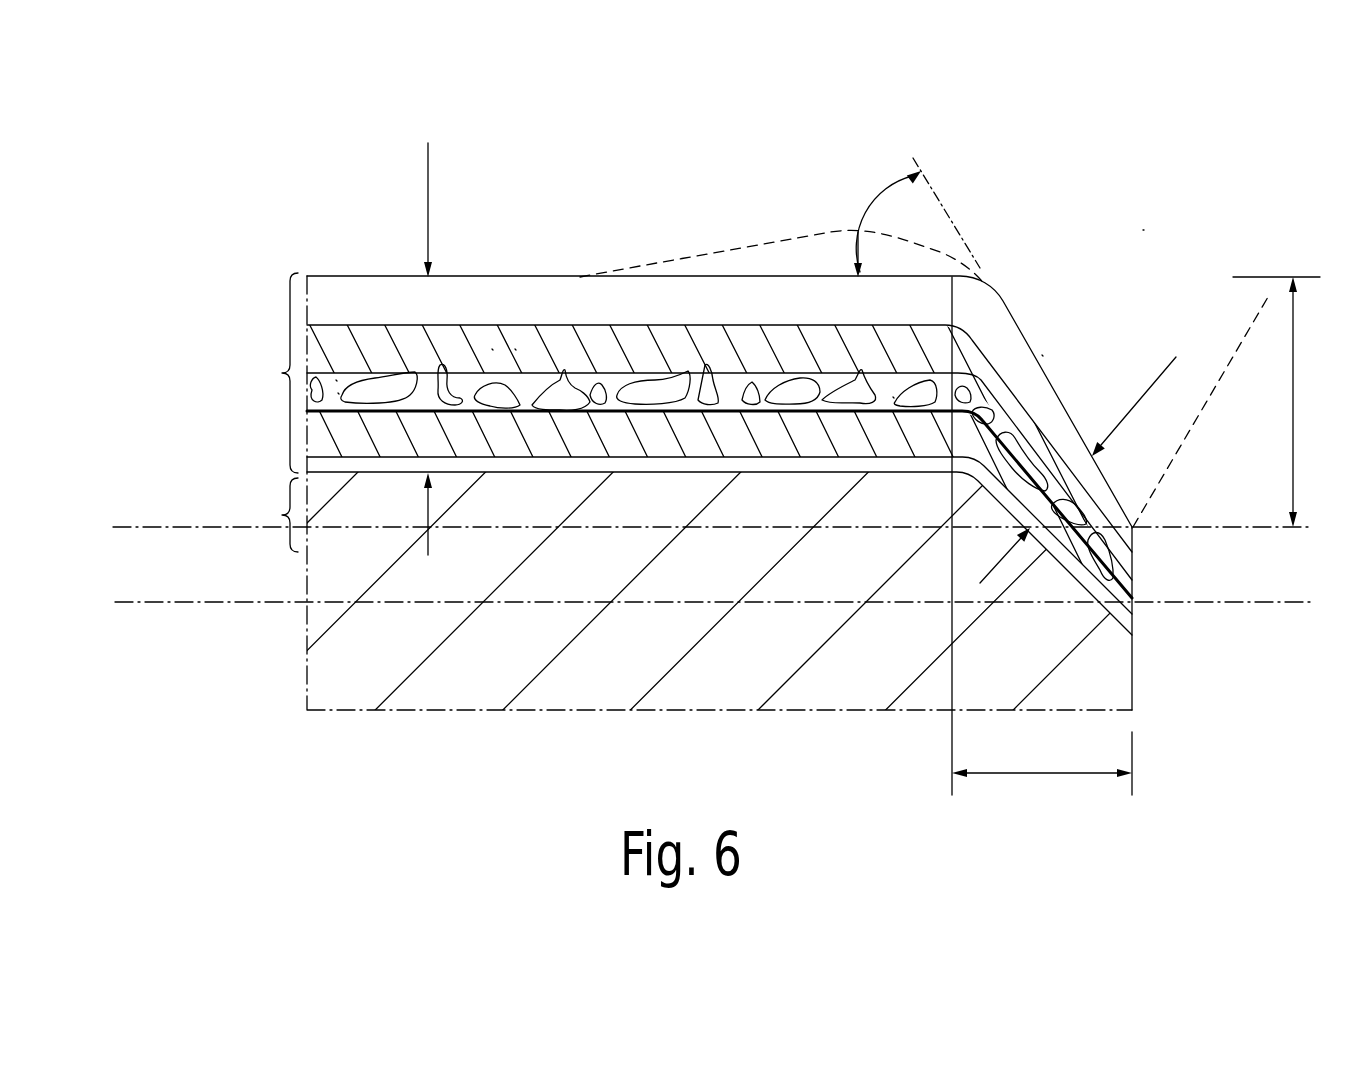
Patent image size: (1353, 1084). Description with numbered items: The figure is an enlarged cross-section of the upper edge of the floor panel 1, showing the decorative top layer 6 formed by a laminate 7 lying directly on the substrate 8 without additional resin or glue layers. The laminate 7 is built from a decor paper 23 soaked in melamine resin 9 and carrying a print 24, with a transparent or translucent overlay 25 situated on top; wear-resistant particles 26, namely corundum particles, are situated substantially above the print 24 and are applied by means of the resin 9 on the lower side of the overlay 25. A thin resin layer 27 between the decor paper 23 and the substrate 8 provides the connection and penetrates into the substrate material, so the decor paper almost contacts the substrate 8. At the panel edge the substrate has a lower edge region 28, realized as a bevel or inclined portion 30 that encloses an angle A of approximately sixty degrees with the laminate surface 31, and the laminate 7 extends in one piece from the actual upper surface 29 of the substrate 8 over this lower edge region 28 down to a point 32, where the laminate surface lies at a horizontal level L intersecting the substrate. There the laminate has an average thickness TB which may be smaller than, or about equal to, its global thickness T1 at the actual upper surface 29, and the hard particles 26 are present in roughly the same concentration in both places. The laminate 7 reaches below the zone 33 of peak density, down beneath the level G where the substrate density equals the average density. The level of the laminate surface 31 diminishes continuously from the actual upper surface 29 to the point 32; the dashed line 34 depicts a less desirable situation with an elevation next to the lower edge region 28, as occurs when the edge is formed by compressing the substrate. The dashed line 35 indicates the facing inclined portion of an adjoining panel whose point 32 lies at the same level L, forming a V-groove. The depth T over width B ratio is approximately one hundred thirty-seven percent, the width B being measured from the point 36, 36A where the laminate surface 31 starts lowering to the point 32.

The floor panel 1 is at (1143, 230).
The decorative top layer 6 is at (515, 350).
The laminate 7 is at (280, 373).
The substrate 8 is at (612, 640).
The melamine resin 9 is at (770, 372).
The decor paper 23 is at (632, 400).
The print 24 is at (338, 395).
The overlay 25 is at (492, 350).
The wear-resistant particles 26 is at (562, 373).
The resin layer 27 is at (893, 398).
The lower edge region 28 is at (336, 392).
The actual upper surface 29 is at (392, 473).
The inclined portion 30 is at (1042, 356).
The laminate surface 31 is at (443, 312).
The point 32 is at (1135, 527).
The zone with the peak density 33 is at (288, 515).
The dashed line 34 is at (832, 233).
The dashed line 35 is at (1197, 425).
The point where the laminate surface starts lowering 36 is at (952, 277).
The point where the laminate surface starts lowering 36A is at (855, 232).
The angle A is at (878, 203).
The width B is at (1042, 769).
The depth T is at (1276, 402).
The global thickness T1 is at (428, 169).
The average thickness TB is at (1142, 395).
The level L is at (178, 527).
The level G is at (163, 602).